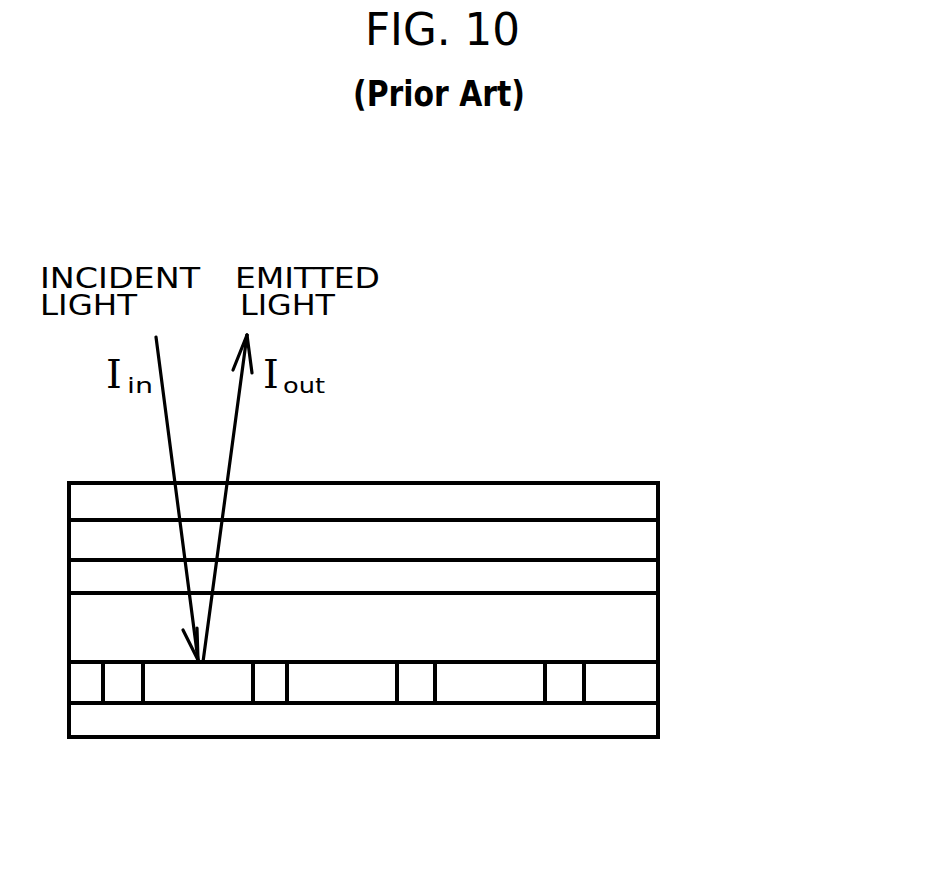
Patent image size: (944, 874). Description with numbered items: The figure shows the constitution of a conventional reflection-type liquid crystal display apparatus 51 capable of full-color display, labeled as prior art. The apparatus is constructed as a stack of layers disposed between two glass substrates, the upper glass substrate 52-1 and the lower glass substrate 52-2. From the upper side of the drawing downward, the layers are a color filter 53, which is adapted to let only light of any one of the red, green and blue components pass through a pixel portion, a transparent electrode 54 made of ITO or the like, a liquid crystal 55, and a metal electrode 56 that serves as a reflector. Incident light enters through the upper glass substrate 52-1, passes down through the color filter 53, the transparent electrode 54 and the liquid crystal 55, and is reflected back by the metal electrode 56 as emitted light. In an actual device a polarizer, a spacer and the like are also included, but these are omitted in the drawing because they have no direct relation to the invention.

The reflection-type liquid crystal display apparatus 51 is at (503, 472).
The upper glass substrate 52-1 is at (647, 500).
The color filter 53 is at (647, 537).
The transparent electrode 54 is at (645, 577).
The liquid crystal 55 is at (642, 627).
The metal electrode 56 is at (648, 675).
The lower glass substrate 52-2 is at (643, 717).